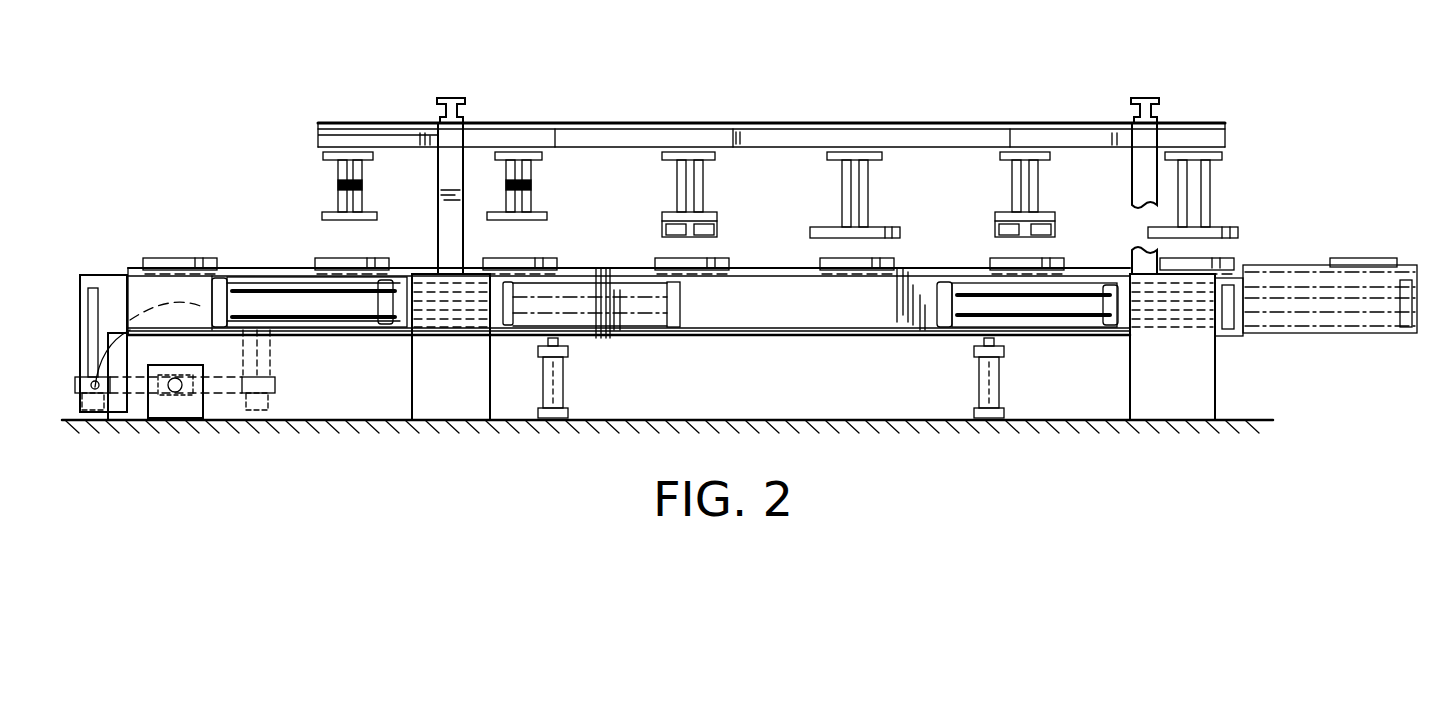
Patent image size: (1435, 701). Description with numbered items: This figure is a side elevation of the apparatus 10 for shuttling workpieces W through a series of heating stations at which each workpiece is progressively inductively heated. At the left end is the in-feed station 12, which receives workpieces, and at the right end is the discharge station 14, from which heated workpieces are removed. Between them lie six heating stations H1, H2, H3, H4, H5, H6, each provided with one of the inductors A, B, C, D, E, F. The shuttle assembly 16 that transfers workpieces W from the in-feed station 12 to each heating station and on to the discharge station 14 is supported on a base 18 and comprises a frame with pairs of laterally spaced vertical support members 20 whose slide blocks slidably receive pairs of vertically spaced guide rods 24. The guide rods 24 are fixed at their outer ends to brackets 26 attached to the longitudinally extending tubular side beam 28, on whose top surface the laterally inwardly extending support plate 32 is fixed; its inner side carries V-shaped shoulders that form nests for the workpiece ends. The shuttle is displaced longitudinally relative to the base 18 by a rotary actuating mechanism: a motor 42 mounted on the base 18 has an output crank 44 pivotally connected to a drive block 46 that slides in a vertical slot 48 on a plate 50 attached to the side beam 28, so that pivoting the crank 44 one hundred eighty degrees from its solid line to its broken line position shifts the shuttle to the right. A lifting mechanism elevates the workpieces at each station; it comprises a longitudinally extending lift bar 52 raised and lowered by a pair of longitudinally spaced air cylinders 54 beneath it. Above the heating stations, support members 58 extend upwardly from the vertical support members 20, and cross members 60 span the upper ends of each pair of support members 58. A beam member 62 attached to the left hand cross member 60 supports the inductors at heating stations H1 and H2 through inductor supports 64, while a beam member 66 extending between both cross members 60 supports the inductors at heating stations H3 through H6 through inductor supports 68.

The apparatus 10 is at (1280, 108).
The in-feed station 12 is at (236, 245).
The discharge station 14 is at (1325, 223).
The shuttle assembly 16 is at (780, 350).
The base 18 is at (828, 420).
The vertical support members 20 is at (438, 410).
The guide rods 24 is at (283, 292).
The brackets 26 is at (222, 290).
The tubular side beam 28 is at (712, 320).
The support plate 32 is at (932, 272).
The motor 42 is at (178, 408).
The output crank 44 is at (127, 390).
The drive block 46 is at (112, 408).
The vertical slot 48 is at (90, 312).
The plate 50 is at (113, 275).
The lift bar 52 is at (868, 340).
The air cylinders 54 is at (568, 368).
The support members 58 is at (453, 135).
The cross members 60 is at (453, 118).
The beam member 62 is at (388, 137).
The inductor supports 64 is at (437, 148).
The beam member 66 is at (775, 138).
The inductor supports 68 is at (861, 156).
The inductor A is at (322, 197).
The inductor B is at (495, 204).
The inductor C is at (668, 210).
The inductor D is at (835, 227).
The inductor E is at (1003, 220).
The inductor F is at (1243, 229).
The heating station H1 is at (382, 236).
The heating station H2 is at (558, 223).
The heating station H3 is at (718, 223).
The heating station H4 is at (906, 229).
The heating station H5 is at (1060, 229).
The heating station H6 is at (1232, 229).
The workpiece W is at (163, 256).